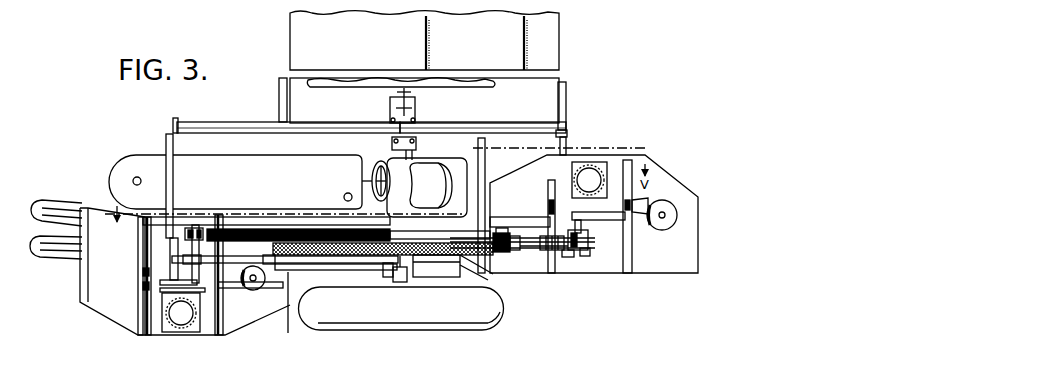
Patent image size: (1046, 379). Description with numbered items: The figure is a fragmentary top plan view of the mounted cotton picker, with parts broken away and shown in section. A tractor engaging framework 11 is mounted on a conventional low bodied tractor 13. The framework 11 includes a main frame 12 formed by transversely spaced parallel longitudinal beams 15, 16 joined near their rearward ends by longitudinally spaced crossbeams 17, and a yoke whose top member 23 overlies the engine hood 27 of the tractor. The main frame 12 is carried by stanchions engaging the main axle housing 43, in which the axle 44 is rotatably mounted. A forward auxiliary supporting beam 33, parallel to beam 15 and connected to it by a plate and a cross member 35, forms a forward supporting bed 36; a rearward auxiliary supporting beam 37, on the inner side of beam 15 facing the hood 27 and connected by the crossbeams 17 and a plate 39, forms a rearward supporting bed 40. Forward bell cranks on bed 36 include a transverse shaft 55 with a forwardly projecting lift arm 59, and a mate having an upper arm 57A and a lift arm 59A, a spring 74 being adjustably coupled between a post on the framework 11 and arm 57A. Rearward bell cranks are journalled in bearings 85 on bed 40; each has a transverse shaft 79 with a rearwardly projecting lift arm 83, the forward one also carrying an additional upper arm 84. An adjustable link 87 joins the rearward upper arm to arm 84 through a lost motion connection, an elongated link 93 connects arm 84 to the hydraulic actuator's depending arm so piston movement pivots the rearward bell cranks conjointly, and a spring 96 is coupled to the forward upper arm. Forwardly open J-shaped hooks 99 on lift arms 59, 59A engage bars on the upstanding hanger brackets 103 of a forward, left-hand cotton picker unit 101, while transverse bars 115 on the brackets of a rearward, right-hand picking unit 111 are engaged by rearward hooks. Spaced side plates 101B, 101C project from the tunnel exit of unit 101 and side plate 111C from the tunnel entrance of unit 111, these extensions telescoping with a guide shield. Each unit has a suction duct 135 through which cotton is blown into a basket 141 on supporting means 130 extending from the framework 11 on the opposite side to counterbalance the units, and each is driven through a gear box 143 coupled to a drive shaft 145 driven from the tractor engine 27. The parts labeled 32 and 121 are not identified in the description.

The tractor engaging framework 11 is at (498, 136).
The main frame 12 is at (478, 122).
The tractor 13 is at (123, 142).
The longitudinal beam 15 is at (176, 237).
The longitudinal beam 16 is at (207, 127).
The crossbeams 17 is at (567, 144).
The top member 23 is at (169, 183).
The engine hood 27 is at (272, 182).
The corner bracket 32 is at (172, 128).
The forward auxiliary supporting beam 33 is at (320, 266).
The cross member 35 is at (392, 277).
The forward supporting bed 36 is at (171, 252).
The rearward auxiliary supporting beam 37 is at (556, 252).
The plate 39 is at (590, 242).
The rearward supporting bed 40 is at (572, 257).
The main axle housing 43 is at (414, 109).
The axle 44 is at (412, 93).
The transverse shaft 55 is at (272, 271).
The upper arm 57A is at (191, 229).
The lift arm 59 is at (235, 286).
The lift arm 59A is at (173, 284).
The spring 74 is at (310, 223).
The transverse shaft 79 is at (579, 219).
The lift arm 83 is at (518, 219).
The upper arm 84 is at (507, 252).
The bearings 85 is at (502, 229).
The adjustable link 87 is at (533, 243).
The elongated link 93 is at (419, 187).
The spring 96 is at (447, 262).
The J-shaped hooks 99 is at (143, 275).
The forward cotton picker unit 101 is at (160, 267).
The side plate 101B is at (313, 228).
The side plate 101C is at (338, 269).
The hanger brackets 103 is at (143, 288).
The rearward cotton picking unit 111 is at (594, 214).
The side plate 111C is at (478, 275).
The transverse bars 115 is at (548, 200).
The sheet 121 is at (357, 82).
The supporting means 130 is at (281, 92).
The suction duct 135 is at (589, 172).
The basket 141 is at (540, 47).
The gear box 143 is at (670, 215).
The drive shaft 145 is at (652, 207).